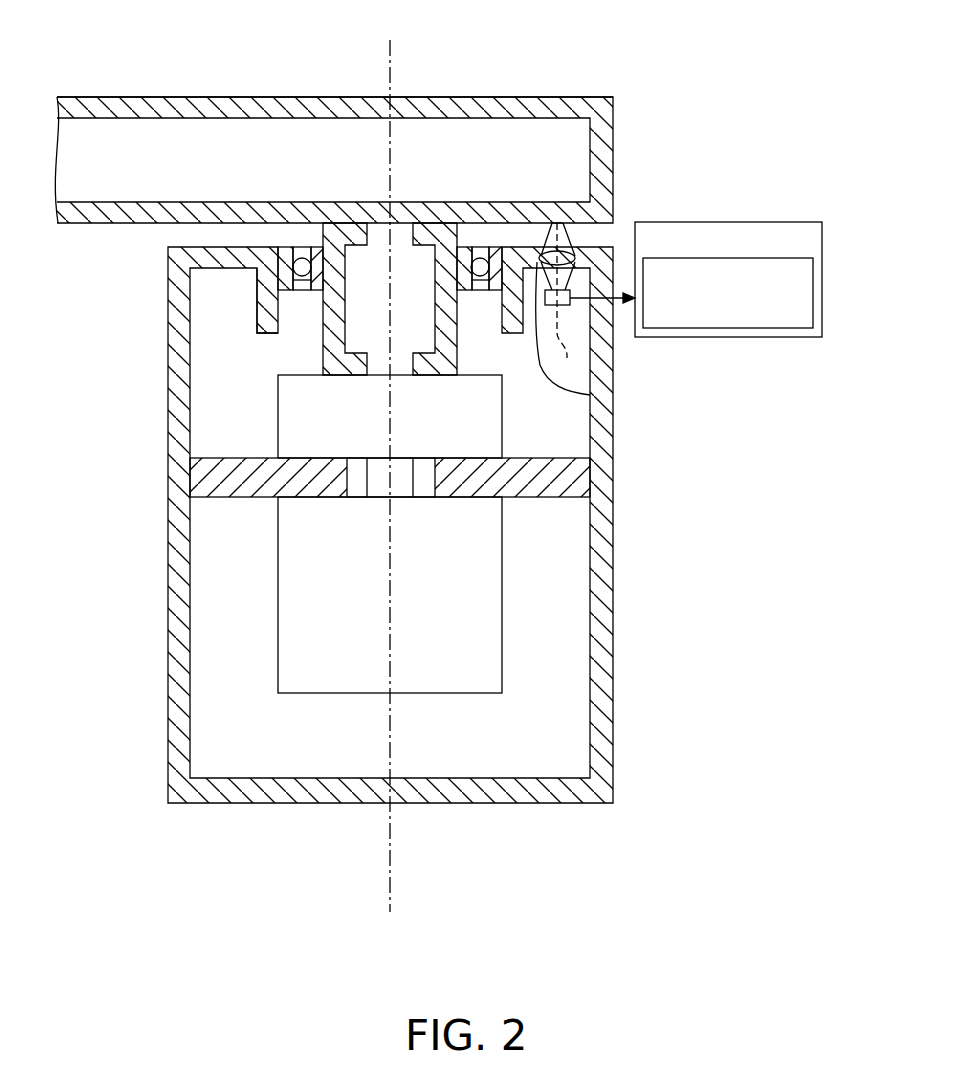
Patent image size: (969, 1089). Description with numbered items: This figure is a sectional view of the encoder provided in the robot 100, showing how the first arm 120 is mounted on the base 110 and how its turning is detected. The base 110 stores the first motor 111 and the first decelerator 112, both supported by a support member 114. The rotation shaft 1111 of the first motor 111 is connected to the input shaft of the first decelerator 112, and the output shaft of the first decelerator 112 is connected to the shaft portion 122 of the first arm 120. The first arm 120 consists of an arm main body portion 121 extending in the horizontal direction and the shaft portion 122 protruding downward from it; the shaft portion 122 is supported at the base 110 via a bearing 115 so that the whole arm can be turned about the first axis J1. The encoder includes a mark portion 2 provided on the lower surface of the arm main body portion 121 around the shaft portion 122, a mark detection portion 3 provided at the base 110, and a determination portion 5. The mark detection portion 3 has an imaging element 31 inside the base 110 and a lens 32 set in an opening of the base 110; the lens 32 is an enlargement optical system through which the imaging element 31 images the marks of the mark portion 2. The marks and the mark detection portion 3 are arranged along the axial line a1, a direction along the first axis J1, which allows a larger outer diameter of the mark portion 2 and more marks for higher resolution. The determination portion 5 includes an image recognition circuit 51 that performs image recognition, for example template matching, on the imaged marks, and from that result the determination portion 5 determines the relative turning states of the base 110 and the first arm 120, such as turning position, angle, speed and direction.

The robot 100 is at (621, 54).
The first arm 120 is at (133, 92).
The arm main body portion 121 is at (215, 96).
The first axis J1 is at (393, 59).
The base 110 is at (617, 455).
The first motor 111 is at (502, 614).
The rotation shaft 1111 is at (392, 486).
The first decelerator 112 is at (278, 410).
The support member 114 is at (225, 478).
The bearing 115 is at (292, 288).
The shaft portion 122 is at (323, 353).
The mark portion 2 is at (576, 228).
The mark detection portion 3 is at (668, 353).
The imaging element 31 is at (570, 307).
The lens 32 is at (592, 395).
The axial line a1 is at (571, 303).
The determination portion 5 is at (752, 222).
The image recognition circuit 51 is at (815, 296).